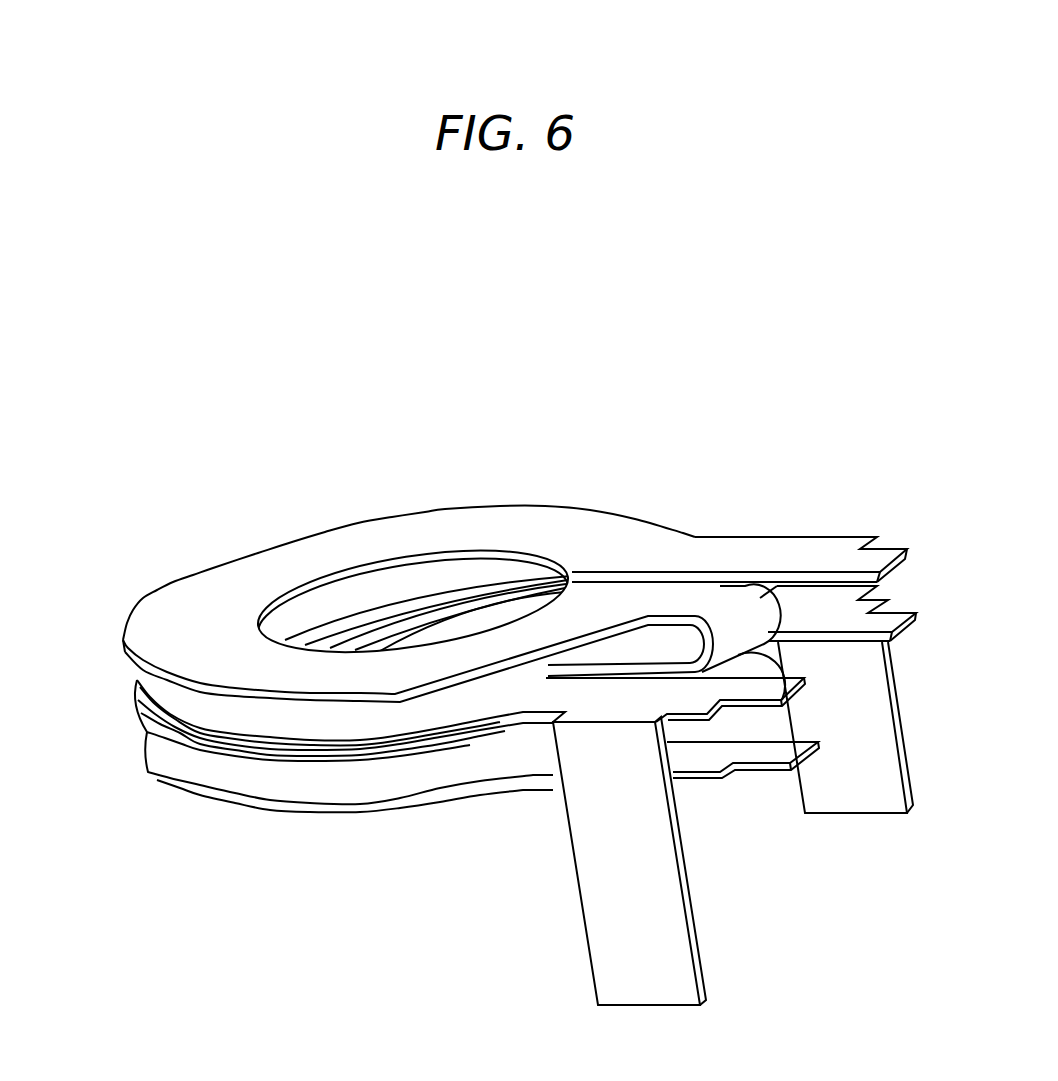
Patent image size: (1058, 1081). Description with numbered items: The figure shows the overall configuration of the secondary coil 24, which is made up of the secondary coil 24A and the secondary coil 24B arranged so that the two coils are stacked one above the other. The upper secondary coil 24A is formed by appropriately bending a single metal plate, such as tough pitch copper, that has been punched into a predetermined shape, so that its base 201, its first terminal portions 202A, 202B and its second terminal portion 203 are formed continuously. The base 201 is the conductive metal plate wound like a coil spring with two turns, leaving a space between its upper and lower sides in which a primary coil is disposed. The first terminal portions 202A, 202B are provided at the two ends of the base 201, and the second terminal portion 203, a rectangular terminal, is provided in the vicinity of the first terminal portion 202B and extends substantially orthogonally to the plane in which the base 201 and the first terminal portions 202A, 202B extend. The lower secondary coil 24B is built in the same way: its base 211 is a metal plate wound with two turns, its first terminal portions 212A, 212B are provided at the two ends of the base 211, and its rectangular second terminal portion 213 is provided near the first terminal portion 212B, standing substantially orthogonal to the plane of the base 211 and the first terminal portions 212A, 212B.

The secondary coil 24 is at (443, 328).
The secondary coil 24A is at (122, 669).
The secondary coil 24B is at (137, 740).
The base 201 is at (274, 561).
The first terminal portion 202A is at (883, 557).
The first terminal portion 202B is at (758, 687).
The second terminal portion 203 is at (592, 906).
The base 211 is at (325, 762).
The first terminal portion 212A is at (757, 751).
The first terminal portion 212B is at (902, 617).
The second terminal portion 213 is at (861, 797).